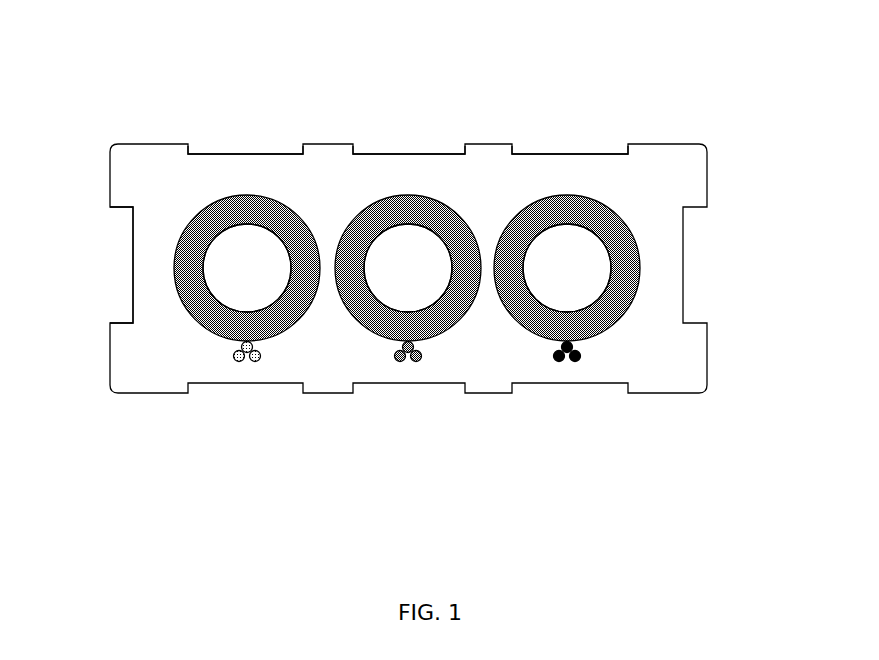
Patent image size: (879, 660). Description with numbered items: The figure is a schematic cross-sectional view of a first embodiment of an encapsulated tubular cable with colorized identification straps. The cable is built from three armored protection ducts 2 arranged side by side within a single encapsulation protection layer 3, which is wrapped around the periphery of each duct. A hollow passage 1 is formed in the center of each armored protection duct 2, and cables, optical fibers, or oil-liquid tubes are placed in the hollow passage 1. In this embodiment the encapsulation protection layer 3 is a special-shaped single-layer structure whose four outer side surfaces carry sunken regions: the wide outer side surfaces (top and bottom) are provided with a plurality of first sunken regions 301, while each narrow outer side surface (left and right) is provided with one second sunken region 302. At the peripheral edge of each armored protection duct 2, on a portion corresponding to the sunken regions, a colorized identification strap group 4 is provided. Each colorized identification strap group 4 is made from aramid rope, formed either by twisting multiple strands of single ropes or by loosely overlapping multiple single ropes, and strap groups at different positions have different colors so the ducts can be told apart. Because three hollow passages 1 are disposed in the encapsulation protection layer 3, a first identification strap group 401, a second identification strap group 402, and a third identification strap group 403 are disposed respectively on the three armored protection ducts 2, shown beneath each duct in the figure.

The hollow passage 1 is at (587, 282).
The armored protection duct 2 is at (630, 255).
The encapsulation protection layer 3 is at (640, 198).
The first sunken region 301 is at (558, 148).
The second sunken region 302 is at (130, 272).
The colorized identification strap group 4 is at (429, 458).
The first identification strap group 401 is at (255, 362).
The second identification strap group 402 is at (410, 360).
The third identification strap group 403 is at (589, 421).